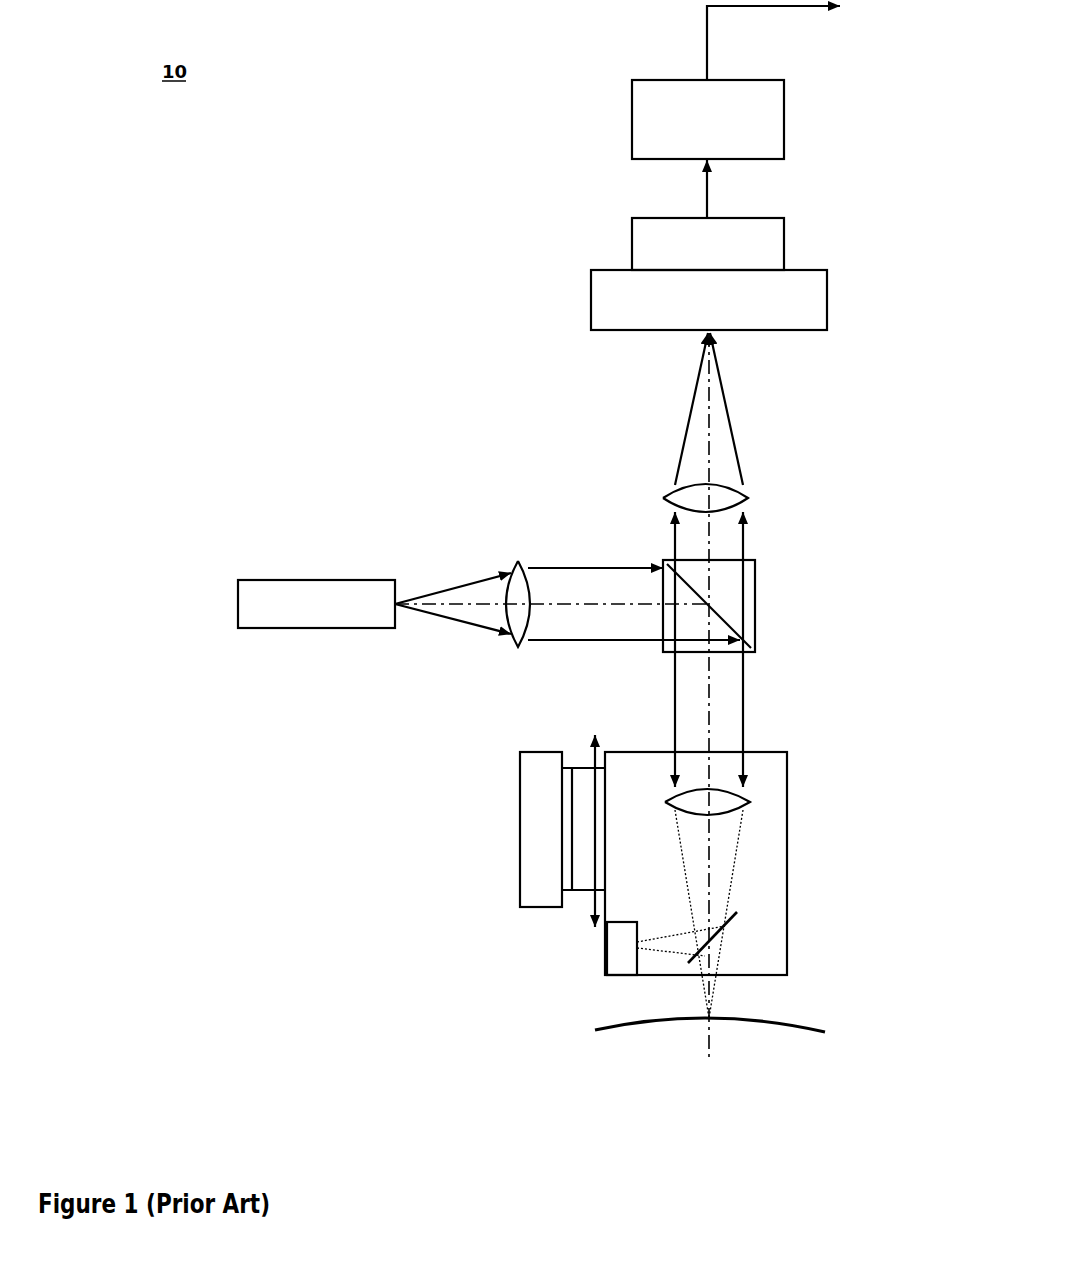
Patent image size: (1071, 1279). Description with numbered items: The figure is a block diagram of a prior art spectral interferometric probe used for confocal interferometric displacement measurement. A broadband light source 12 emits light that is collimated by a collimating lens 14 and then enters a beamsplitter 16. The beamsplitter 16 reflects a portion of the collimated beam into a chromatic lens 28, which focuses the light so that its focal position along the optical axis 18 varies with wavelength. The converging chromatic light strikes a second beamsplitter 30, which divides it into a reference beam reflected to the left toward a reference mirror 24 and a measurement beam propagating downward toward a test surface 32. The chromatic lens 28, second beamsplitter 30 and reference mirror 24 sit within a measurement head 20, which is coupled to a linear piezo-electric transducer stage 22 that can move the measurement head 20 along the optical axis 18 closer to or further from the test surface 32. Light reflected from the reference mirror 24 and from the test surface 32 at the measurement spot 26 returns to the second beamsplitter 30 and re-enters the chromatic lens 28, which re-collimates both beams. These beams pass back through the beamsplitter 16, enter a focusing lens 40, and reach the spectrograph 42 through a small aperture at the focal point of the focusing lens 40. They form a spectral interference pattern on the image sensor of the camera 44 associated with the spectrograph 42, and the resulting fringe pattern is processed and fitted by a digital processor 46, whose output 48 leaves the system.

The broadband light source 12 is at (236, 598).
The collimating lens 14 is at (513, 560).
The beamsplitter 16 is at (757, 607).
The optical axis 18 is at (705, 713).
The measurement head 20 is at (789, 832).
The linear piezo-electric transducer (PZT) stage 22 is at (518, 785).
The reference mirror 24 is at (607, 947).
The measurement spot 26 is at (711, 1020).
The chromatic lens 28 is at (757, 800).
The second beamsplitter 30 is at (742, 917).
The test surface 32 is at (797, 1028).
The focusing lens 40 is at (752, 500).
The spectrograph 42 is at (591, 308).
The camera 44 is at (632, 245).
The digital processor 46 is at (632, 122).
The output signal 48 is at (707, 37).